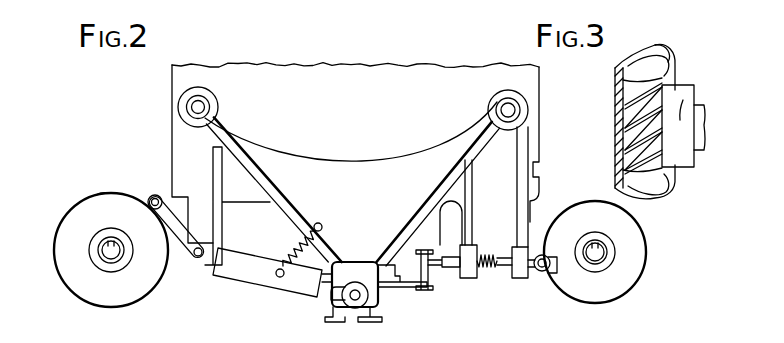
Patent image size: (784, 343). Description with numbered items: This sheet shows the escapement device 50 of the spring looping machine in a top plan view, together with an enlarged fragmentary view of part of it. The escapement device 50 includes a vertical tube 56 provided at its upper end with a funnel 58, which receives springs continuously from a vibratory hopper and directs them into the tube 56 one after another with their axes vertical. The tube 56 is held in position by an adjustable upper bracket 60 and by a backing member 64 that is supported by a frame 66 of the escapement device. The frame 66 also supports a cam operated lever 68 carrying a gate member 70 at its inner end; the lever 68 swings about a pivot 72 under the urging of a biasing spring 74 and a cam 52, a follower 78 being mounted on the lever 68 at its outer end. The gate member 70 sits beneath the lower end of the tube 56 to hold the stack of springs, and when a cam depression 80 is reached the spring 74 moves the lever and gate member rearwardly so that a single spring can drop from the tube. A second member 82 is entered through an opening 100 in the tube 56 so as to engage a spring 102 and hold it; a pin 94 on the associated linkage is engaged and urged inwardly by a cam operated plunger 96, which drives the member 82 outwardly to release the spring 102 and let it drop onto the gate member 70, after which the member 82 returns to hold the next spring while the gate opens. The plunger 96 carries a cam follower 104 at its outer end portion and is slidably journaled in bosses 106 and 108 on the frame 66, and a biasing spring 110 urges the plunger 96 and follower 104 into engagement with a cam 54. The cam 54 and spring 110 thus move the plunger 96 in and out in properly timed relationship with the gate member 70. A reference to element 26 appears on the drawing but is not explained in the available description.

In FIG. 2, the axle 26 is at (105, 253).
In FIG. 2, the escapement device 50 is at (397, 308).
In FIG. 2, the cam 52 is at (117, 203).
In FIG. 2, the cam 54 is at (625, 280).
In FIG. 2, the vertical tube 56 is at (352, 298).
In FIG. 3, the vertical tube 56 is at (616, 124).
In FIG. 2, the funnel 58 is at (342, 298).
In FIG. 2, the upper bracket 60 is at (353, 318).
In FIG. 2, the backing member 64 is at (350, 262).
In FIG. 2, the frame 66 is at (342, 178).
In FIG. 2, the cam operated lever 68 is at (231, 265).
In FIG. 2, the gate member 70 is at (330, 264).
In FIG. 2, the pivot 72 is at (193, 258).
In FIG. 2, the biasing spring 74 is at (285, 259).
In FIG. 2, the follower 78 is at (152, 196).
In FIG. 2, the cam depression 80 is at (72, 222).
In FIG. 3, the second member 82 is at (696, 100).
In FIG. 2, the pin 94 is at (423, 250).
In FIG. 2, the cam operated plunger 96 is at (455, 268).
In FIG. 3, the opening 100 is at (683, 100).
In FIG. 3, the spring 102 is at (618, 140).
In FIG. 2, the cam follower 104 is at (545, 272).
In FIG. 2, the boss 106 is at (468, 278).
In FIG. 2, the boss 108 is at (520, 280).
In FIG. 2, the biasing spring 110 is at (484, 270).